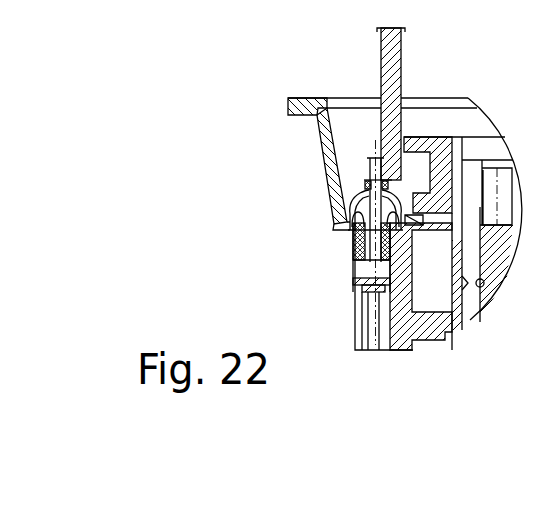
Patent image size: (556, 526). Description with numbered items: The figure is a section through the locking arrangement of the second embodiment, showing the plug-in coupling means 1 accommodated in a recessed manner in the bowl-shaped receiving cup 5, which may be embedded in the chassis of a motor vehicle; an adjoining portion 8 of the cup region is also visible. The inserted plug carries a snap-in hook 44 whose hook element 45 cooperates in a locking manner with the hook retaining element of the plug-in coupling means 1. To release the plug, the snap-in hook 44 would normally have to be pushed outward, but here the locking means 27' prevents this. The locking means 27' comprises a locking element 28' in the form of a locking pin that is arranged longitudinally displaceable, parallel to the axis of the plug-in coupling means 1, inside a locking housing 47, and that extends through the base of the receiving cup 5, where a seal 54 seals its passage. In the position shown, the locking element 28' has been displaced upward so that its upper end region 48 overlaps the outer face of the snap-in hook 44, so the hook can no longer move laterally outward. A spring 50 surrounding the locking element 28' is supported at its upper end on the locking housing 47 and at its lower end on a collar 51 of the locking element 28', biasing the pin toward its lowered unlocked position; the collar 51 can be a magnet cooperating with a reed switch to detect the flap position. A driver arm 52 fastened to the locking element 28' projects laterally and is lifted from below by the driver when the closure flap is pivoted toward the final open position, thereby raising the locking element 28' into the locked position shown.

The snap-in hook 44 is at (392, 62).
The hook element 45 is at (405, 157).
The plug-in coupling means 1 is at (487, 172).
The flange 8 is at (292, 106).
The receiving cup 5 is at (330, 162).
The upper end region 48 is at (377, 168).
The seal 54 is at (348, 207).
The locking element 28' is at (311, 254).
The spring 50 is at (367, 272).
The collar 51 is at (358, 280).
The driver arm 52 is at (362, 292).
The locking housing 47 is at (400, 332).
The locking means 27' is at (325, 319).